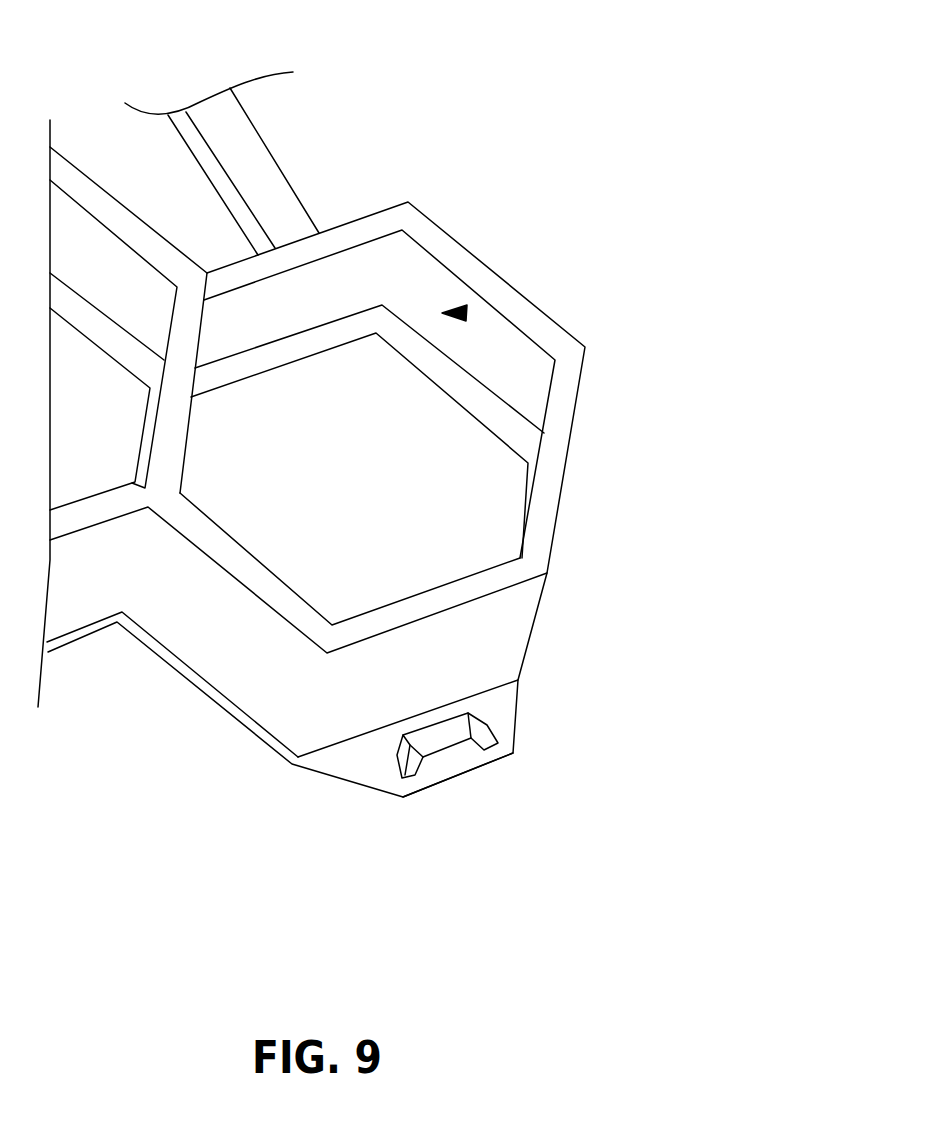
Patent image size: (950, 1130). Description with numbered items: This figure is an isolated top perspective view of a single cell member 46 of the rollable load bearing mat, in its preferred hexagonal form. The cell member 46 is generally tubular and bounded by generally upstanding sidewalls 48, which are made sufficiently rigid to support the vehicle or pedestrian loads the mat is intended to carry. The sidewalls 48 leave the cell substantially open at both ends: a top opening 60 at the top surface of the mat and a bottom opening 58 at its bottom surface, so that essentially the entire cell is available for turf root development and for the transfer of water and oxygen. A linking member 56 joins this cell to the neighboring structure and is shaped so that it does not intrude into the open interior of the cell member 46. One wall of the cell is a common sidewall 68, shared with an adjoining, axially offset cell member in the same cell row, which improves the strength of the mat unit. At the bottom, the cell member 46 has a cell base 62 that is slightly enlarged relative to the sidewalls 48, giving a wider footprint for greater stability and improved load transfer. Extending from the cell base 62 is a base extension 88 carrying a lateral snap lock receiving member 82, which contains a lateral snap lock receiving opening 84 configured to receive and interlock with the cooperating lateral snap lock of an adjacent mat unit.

The cell member 46 is at (603, 421).
The sidewall 48 is at (343, 277).
The linking member 56 is at (258, 170).
The bottom opening 58 is at (275, 518).
The top opening 60 is at (465, 311).
The cell base 62 is at (232, 712).
The common sidewall 68 is at (173, 413).
The lateral snap lock receiving member 82 is at (405, 752).
The lateral snap lock receiving opening 84 is at (460, 760).
The base extension 88 is at (502, 700).